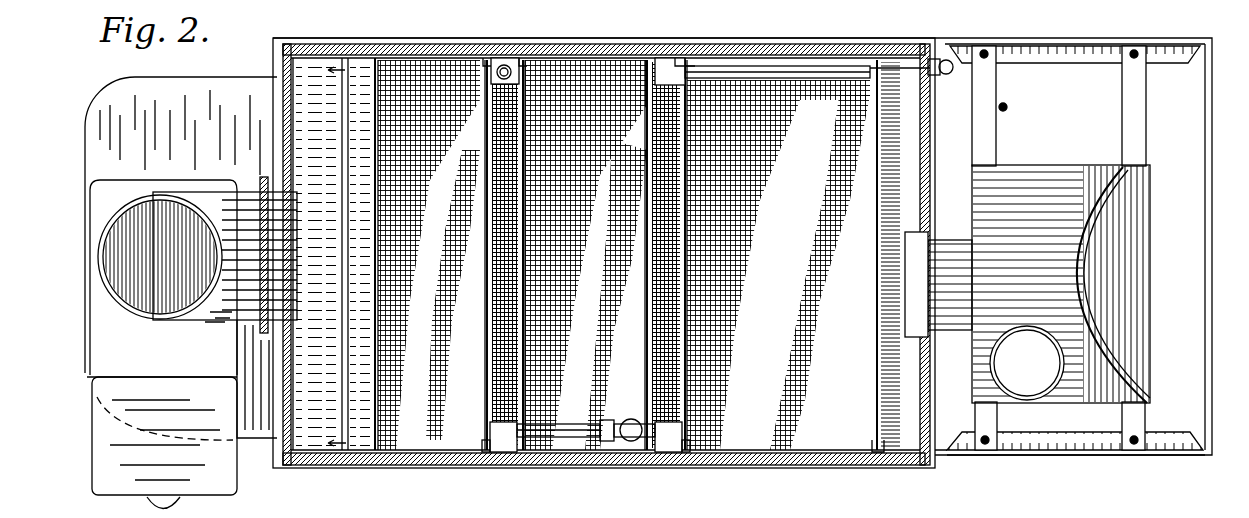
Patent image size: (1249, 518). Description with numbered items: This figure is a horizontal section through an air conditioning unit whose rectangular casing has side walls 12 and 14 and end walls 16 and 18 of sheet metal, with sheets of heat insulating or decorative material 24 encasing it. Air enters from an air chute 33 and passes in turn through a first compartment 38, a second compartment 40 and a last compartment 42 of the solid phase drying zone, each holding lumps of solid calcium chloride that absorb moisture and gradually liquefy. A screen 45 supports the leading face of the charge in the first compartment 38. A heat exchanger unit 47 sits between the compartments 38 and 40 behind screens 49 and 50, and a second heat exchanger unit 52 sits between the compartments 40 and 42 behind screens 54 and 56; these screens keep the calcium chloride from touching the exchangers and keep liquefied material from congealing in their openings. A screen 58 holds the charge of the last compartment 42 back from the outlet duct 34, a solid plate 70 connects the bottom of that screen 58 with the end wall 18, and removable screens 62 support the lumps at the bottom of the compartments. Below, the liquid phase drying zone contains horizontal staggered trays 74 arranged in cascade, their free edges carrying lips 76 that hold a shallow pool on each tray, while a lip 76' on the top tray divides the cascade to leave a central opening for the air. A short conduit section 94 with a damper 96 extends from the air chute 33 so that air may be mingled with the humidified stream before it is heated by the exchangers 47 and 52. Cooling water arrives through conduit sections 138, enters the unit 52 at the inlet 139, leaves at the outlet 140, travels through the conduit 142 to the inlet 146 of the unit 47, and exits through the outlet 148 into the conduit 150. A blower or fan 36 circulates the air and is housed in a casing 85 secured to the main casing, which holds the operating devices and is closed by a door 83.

The side wall 12 is at (482, 455).
The side wall 14 is at (502, 48).
The end wall 16 is at (295, 118).
The end wall 18 is at (918, 172).
The heat insulating or decorative material 24 is at (612, 47).
The air chute 33 is at (155, 196).
The outlet duct 34 is at (947, 275).
The blower or fan 36 is at (1047, 184).
The first compartment 38 is at (430, 72).
The second compartment 40 is at (561, 62).
The last compartment 42 is at (727, 95).
The screen 45 is at (380, 250).
The heat exchanger unit 47 is at (505, 195).
The screen 49 is at (485, 368).
The screen 50 is at (524, 396).
The second heat exchanger unit 52 is at (670, 201).
The screen 54 is at (647, 268).
The screen 56 is at (688, 283).
The screen 58 is at (877, 272).
The removable screens 62 is at (413, 430).
The solid plate 70 is at (893, 120).
The trays 74 is at (360, 72).
The lips 76 is at (347, 228).
The lip 76' is at (324, 422).
The door 83 is at (1088, 456).
The casing 85 is at (1212, 192).
The short conduit section 94 is at (232, 243).
The damper 96 is at (268, 253).
The conduit sections 138 is at (806, 70).
The inlet 139 is at (682, 52).
The outlet 140 is at (643, 440).
The conduit 142 is at (592, 440).
The inlet 146 is at (520, 453).
The outlet 148 is at (506, 68).
The conduit 150 is at (1007, 107).